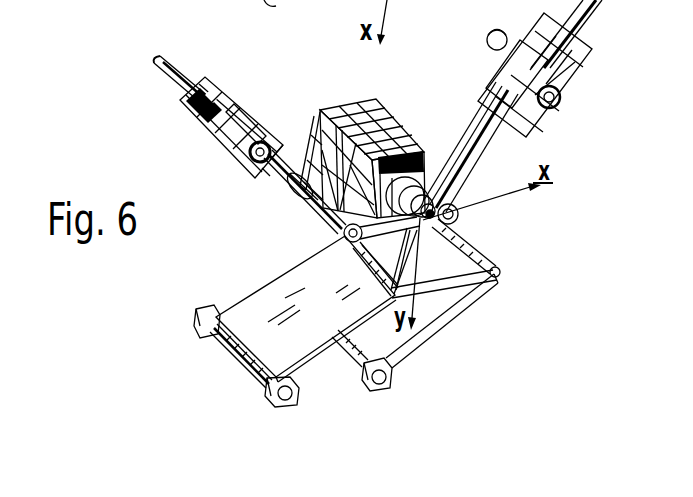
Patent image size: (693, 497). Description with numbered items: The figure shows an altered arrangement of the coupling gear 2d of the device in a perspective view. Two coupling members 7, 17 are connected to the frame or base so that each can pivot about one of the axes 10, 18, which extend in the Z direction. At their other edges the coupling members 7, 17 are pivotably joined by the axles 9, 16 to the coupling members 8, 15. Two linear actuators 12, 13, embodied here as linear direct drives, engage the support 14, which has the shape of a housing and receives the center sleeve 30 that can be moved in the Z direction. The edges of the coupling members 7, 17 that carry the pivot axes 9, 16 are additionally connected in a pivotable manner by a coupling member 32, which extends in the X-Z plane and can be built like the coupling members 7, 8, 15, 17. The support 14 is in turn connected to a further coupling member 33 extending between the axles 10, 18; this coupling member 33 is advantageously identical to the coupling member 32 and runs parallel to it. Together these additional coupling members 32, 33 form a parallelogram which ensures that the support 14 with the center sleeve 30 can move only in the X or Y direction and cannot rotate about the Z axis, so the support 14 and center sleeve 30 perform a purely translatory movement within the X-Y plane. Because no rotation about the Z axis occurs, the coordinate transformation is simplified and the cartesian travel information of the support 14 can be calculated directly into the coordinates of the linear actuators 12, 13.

The coupling member 7 is at (437, 303).
The coupling member 8 is at (467, 243).
The axle 9 is at (527, 287).
The axis 10 is at (459, 213).
The linear actuator 12 is at (192, 66).
The linear actuator 13 is at (615, 22).
The support 14 is at (378, 105).
The coupling member 15 is at (340, 246).
The axle 16 is at (277, 6).
The coupling member 17 is at (257, 332).
The axis 18 is at (336, 229).
The center sleeve 30 is at (318, 127).
The coupling member 32 is at (437, 265).
The coupling member 33 is at (330, 224).
The coupling gear 2d is at (645, 122).